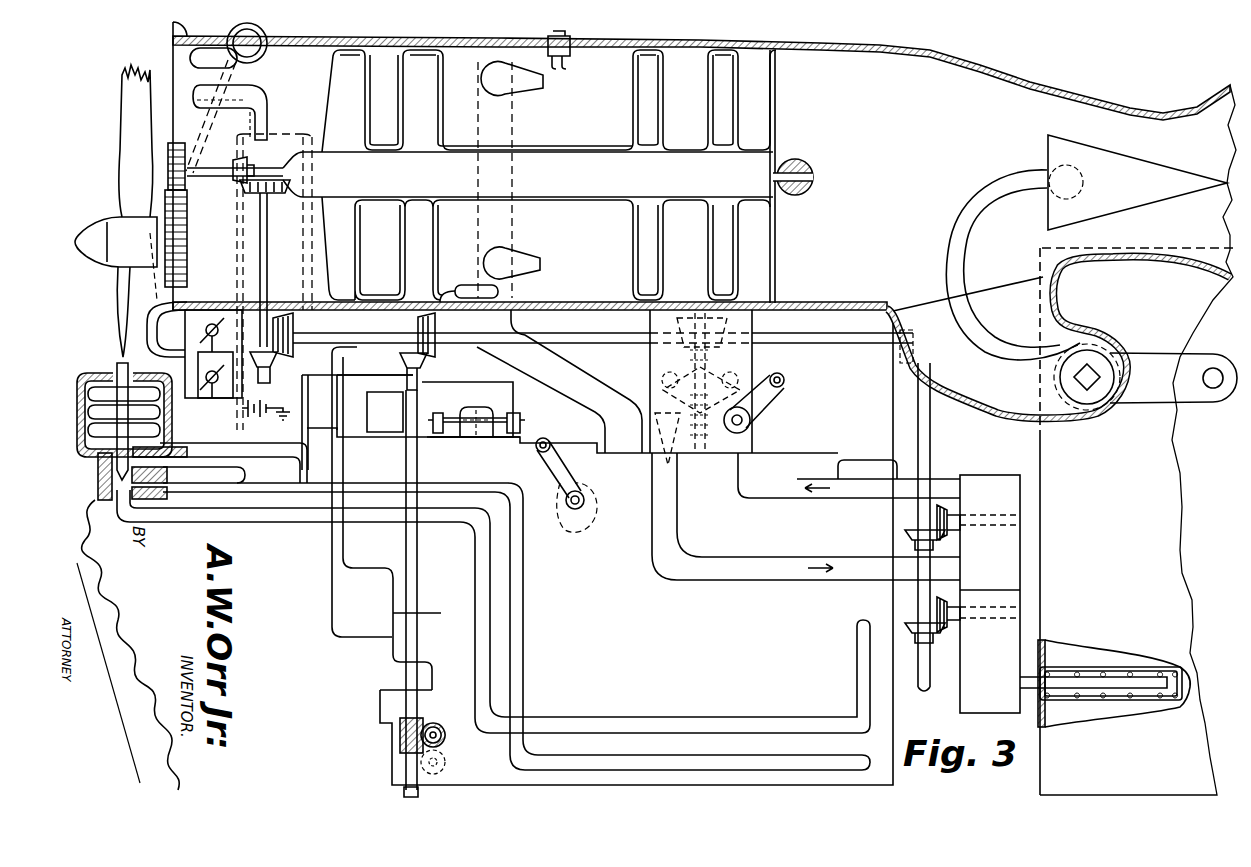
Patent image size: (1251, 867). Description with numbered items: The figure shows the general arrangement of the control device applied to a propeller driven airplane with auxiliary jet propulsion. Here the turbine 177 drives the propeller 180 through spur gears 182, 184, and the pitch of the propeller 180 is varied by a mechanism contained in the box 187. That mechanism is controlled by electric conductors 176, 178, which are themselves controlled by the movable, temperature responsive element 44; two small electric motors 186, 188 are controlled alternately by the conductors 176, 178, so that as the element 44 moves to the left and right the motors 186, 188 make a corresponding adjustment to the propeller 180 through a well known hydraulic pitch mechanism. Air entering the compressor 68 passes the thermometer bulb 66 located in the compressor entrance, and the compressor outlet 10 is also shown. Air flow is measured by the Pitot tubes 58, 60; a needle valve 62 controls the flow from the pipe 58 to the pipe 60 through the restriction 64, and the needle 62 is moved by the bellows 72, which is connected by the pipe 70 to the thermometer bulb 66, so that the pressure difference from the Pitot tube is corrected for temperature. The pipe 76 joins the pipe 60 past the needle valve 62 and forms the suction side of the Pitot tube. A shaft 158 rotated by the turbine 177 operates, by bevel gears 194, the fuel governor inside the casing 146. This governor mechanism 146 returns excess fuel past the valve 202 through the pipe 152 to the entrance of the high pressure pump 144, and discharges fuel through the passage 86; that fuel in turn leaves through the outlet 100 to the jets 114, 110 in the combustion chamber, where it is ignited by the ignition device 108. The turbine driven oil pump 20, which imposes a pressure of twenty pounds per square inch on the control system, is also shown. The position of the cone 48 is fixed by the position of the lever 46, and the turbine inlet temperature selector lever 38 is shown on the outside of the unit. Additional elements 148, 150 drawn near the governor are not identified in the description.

The compressor outlet 10 is at (467, 115).
The turbine driven oil pump 20 is at (446, 763).
The turbine inlet temperature selector lever 38 is at (578, 482).
The movable element 44 is at (478, 437).
The lever 46 is at (1162, 389).
The cone 48 is at (1125, 202).
The Pitot tube 58 is at (268, 100).
The Pitot tube 60 is at (253, 85).
The needle valve 62 is at (98, 465).
The restriction 64 is at (165, 522).
The thermometer bulb 66 is at (190, 58).
The compressor 68 is at (340, 67).
The pipe 70 is at (263, 28).
The bellows 72 is at (96, 372).
The pipe 76 is at (766, 728).
The passage 86 is at (707, 467).
The pipe 100 is at (615, 417).
The ignition device 108 is at (568, 68).
The jet 110 is at (489, 262).
The jet 114 is at (490, 72).
The high pressure pump 144 is at (995, 563).
The governor mechanism 146 is at (752, 428).
The pipe 148 is at (814, 505).
The pivot 150 is at (785, 384).
The pipe 152 is at (760, 577).
The shaft 158 is at (340, 335).
The electric conductor 176 is at (436, 404).
The turbine 177 is at (677, 238).
The electric conductor 178 is at (500, 380).
The propeller 180 is at (122, 116).
The spur gear 182 is at (190, 143).
The spur gear 184 is at (188, 228).
The small electric motor 186 is at (212, 398).
The box 187 is at (227, 307).
The small electric motor 188 is at (185, 352).
The bevel gears 194 is at (727, 327).
The valve 202 is at (660, 460).